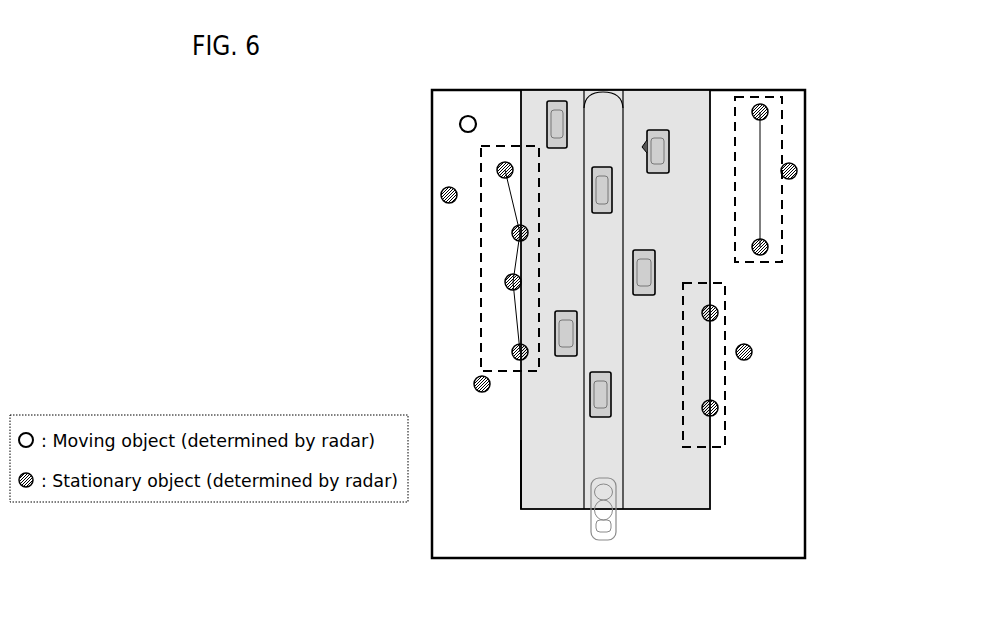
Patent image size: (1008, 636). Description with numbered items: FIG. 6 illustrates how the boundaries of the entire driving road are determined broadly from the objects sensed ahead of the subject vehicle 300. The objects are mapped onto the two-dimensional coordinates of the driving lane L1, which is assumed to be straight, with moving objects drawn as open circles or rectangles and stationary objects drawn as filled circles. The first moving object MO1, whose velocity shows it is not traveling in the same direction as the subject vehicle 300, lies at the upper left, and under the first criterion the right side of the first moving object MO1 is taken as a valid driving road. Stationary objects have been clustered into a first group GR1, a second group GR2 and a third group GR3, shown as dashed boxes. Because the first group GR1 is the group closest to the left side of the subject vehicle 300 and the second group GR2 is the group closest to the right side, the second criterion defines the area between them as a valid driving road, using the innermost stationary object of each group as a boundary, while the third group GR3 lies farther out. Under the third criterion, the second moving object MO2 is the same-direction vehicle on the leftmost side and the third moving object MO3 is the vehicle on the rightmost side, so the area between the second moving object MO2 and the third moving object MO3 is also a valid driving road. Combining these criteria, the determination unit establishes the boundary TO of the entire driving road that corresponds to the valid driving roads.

The first moving object MO1 is at (467, 114).
The second moving object MO2 is at (553, 100).
The third moving object MO3 is at (653, 129).
The driving lane L1 is at (610, 90).
The first group GR1 is at (481, 318).
The second group GR2 is at (725, 390).
The third group GR3 is at (783, 212).
The boundary of the entire driving road TO is at (538, 512).
The subject vehicle 300 is at (605, 540).